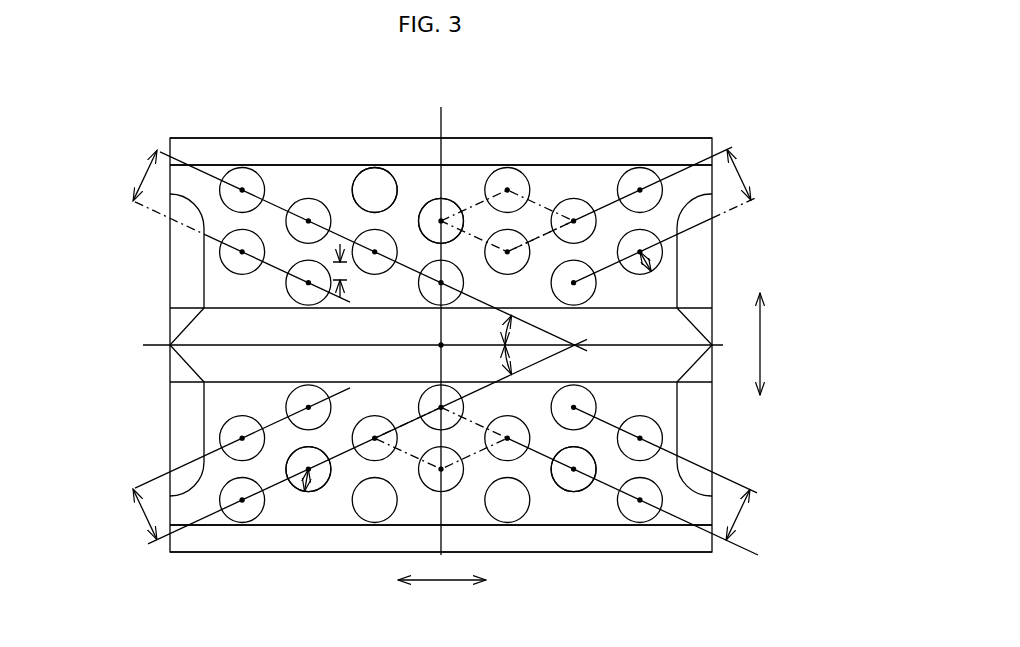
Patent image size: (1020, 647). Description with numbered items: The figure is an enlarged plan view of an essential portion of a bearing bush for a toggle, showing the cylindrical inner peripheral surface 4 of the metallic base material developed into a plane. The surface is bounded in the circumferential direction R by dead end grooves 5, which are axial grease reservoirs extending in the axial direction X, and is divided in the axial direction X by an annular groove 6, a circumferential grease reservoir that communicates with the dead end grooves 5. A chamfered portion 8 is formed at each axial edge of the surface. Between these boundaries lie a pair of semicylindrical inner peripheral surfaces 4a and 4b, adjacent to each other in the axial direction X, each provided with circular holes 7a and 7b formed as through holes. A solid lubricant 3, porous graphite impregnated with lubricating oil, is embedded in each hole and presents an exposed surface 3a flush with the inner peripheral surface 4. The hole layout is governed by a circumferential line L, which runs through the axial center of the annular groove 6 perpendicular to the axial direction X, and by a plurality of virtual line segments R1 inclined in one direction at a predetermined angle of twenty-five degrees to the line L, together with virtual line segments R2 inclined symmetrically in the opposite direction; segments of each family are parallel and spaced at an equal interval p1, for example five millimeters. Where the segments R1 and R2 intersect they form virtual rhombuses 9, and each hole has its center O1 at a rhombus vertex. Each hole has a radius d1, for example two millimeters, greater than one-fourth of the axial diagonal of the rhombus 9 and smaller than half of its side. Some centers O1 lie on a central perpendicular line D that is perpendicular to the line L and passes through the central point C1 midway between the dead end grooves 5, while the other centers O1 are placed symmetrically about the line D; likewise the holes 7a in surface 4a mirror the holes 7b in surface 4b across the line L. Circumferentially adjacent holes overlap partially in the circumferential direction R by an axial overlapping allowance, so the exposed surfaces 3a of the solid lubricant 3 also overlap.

The solid lubricant 3 is at (312, 202).
The exposed surface 3a is at (375, 186).
The cylindrical inner peripheral surface 4 is at (600, 178).
The semicylindrical inner peripheral surface 4a is at (280, 178).
The semicylindrical inner peripheral surface 4b is at (605, 510).
The dead end groove 5 is at (185, 275).
The annular groove 6 is at (215, 369).
The circular hole 7a is at (446, 214).
The circular hole 7b is at (296, 487).
The chamfered portion 8 is at (185, 148).
The virtual rhombus 9 is at (502, 189).
The circumferential line L is at (165, 343).
The central point C1 is at (436, 346).
The center O1 is at (441, 219).
The central perpendicular line D is at (441, 543).
The circumferential direction R is at (442, 600).
The axial direction X is at (763, 344).
The virtual line segment R1 is at (677, 172).
The virtual line segment R2 is at (208, 172).
The equal interval p1 is at (145, 178).
The radius d1 is at (655, 258).